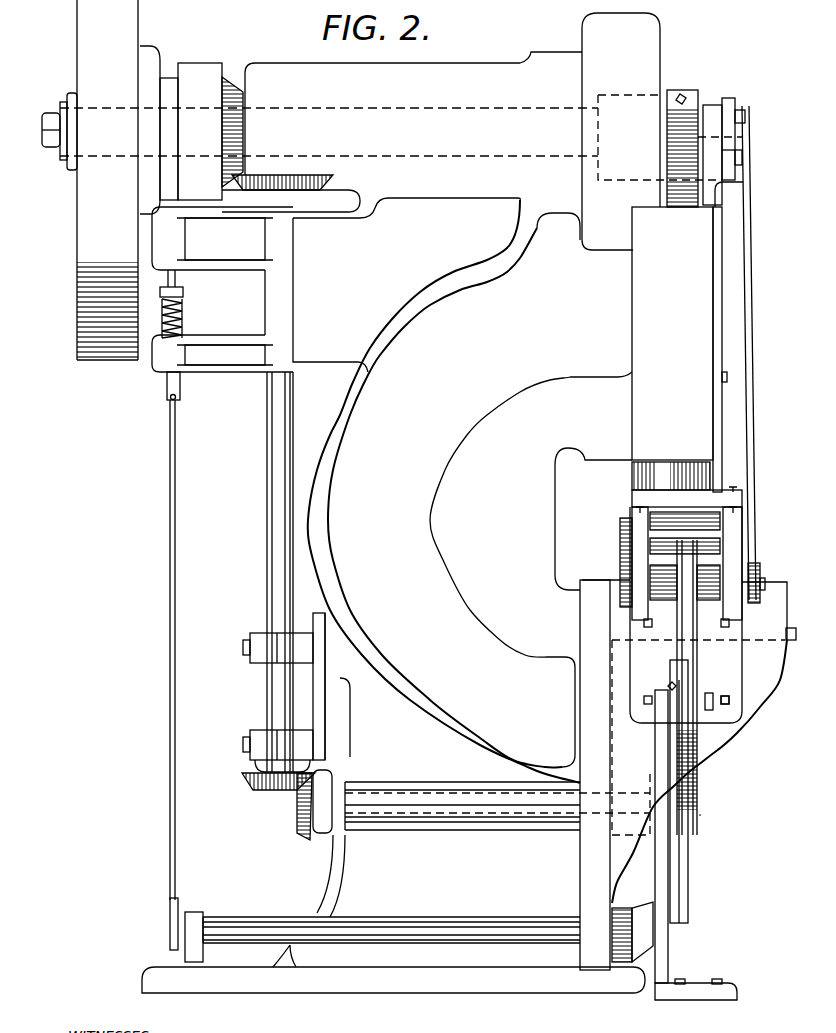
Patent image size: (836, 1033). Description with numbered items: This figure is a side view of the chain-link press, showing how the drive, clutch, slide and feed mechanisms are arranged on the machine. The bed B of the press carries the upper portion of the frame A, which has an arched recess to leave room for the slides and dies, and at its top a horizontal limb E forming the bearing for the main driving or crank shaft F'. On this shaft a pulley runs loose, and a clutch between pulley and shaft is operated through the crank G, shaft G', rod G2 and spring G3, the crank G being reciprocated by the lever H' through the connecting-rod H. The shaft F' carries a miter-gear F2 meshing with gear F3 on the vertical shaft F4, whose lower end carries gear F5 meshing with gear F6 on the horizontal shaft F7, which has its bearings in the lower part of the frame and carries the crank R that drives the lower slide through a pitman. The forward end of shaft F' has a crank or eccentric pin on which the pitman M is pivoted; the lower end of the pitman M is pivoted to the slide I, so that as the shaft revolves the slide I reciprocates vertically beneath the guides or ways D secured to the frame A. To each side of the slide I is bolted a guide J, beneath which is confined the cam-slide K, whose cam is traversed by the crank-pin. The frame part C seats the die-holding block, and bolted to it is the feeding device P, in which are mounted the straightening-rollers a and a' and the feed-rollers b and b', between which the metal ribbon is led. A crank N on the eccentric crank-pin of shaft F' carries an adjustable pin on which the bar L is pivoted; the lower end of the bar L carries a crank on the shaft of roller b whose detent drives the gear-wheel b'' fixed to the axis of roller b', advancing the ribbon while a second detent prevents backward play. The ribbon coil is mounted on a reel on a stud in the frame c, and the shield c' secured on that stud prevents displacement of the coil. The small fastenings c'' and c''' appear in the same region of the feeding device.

The upper portion of the frame A is at (469, 582).
The bed of a press B is at (393, 786).
The part of frame C is at (565, 737).
The guides or ways D is at (672, 333).
The horizontal limb E is at (662, 131).
The main driving or crank shaft F' is at (320, 180).
The miter-gear F2 is at (233, 76).
The gear F3 is at (332, 184).
The vertical shaft F4 is at (284, 572).
The gear F5 is at (278, 790).
The gear F6 is at (297, 806).
The horizontal shaft F7 is at (412, 832).
The crank G is at (632, 926).
The shaft G' is at (391, 922).
The rod G2 is at (174, 667).
The spring G3 is at (181, 304).
The connecting-rod H is at (685, 791).
The lever H' is at (779, 649).
The slide I is at (632, 473).
The guide J is at (716, 330).
The cam-slide K is at (729, 194).
The bar L is at (753, 353).
The pitman M is at (682, 148).
The crank N is at (729, 101).
The feeding device P is at (686, 605).
The crank R is at (670, 824).
The straightening-roller a is at (685, 546).
The straightening-roller a' is at (685, 582).
The feed-roller b is at (685, 521).
The feed-roller b' is at (646, 574).
The gear-wheel b'' is at (767, 580).
The frame c is at (696, 845).
The shield c' is at (694, 687).
The bolt c'' is at (714, 692).
The bolt c''' is at (731, 693).